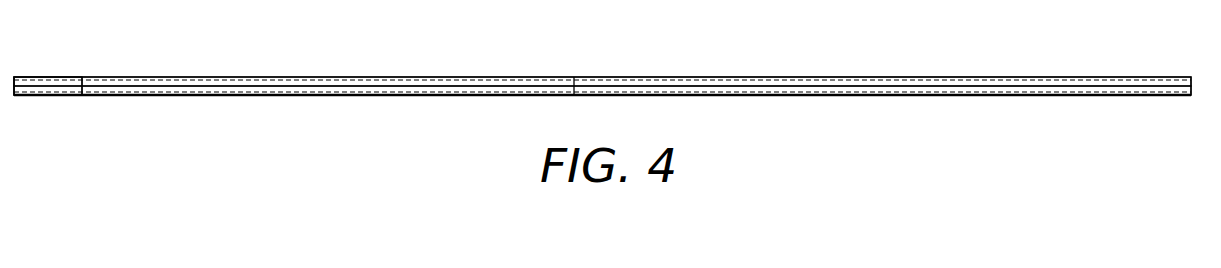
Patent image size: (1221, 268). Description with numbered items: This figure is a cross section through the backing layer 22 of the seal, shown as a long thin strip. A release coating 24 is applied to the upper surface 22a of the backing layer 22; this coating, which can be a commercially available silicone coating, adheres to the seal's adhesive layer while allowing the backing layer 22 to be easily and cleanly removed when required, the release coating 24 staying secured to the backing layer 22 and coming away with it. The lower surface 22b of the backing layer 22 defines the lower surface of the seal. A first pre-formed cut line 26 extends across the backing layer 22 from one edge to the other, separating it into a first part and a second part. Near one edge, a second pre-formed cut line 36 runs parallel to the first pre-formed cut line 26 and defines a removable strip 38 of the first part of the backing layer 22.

The backing layer 22 is at (1145, 103).
The upper surface of the backing layer 22a is at (867, 85).
The lower surface of the backing layer 22b is at (803, 95).
The release coating 24 is at (1031, 82).
The first pre-formed cut line 26 is at (577, 80).
The second pre-formed cut line 36 is at (83, 82).
The removable strip 38 is at (48, 90).